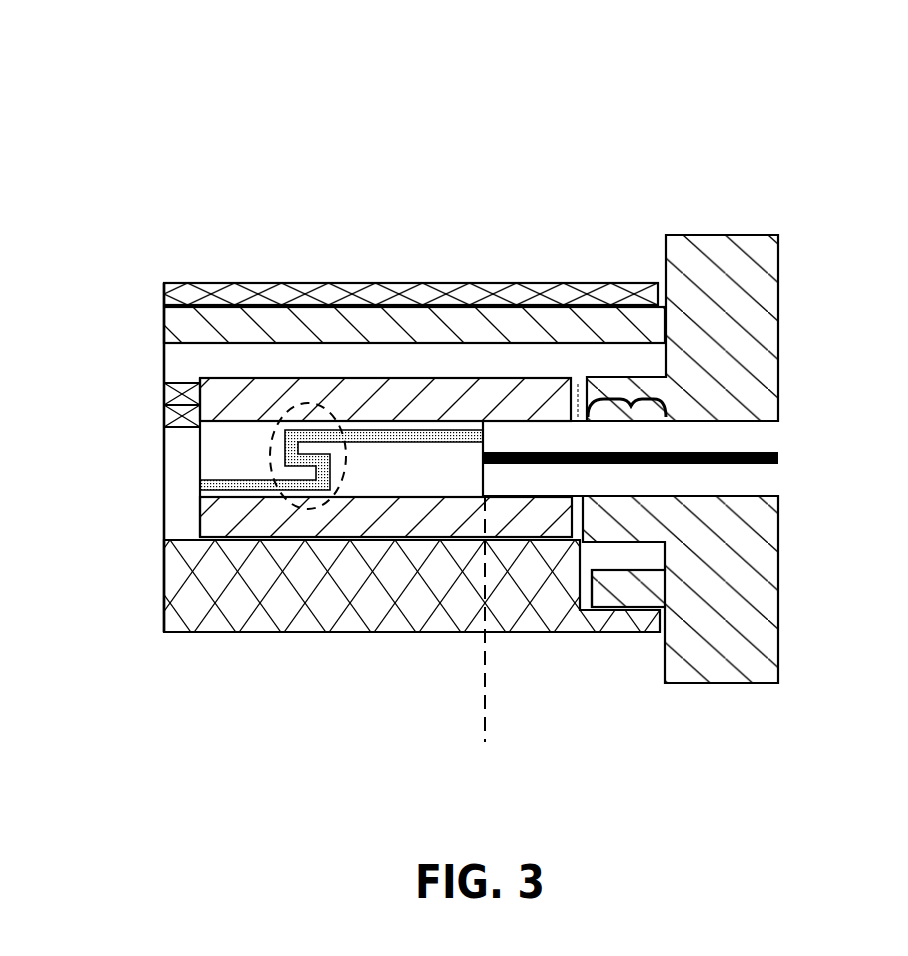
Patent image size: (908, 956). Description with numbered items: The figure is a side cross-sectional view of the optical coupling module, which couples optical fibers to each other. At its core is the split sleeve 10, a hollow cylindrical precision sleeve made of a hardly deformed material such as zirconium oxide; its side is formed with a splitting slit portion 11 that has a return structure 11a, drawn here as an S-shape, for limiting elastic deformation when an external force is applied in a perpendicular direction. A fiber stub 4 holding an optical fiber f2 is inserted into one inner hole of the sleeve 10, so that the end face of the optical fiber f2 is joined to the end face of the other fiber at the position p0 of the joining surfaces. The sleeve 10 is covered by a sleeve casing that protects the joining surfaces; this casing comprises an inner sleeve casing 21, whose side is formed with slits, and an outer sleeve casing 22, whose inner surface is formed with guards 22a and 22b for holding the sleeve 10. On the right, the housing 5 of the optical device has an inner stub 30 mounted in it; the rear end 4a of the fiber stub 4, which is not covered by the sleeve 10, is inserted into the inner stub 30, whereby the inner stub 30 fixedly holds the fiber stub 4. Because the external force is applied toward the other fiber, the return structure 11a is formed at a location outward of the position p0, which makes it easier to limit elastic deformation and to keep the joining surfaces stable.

The outer sleeve casing 22 is at (315, 292).
The guard 22a is at (164, 420).
The guard 22b is at (190, 578).
The split sleeve 10 is at (240, 395).
The splitting slit portion 11 is at (430, 432).
The return structure 11a is at (320, 404).
The housing 5 is at (780, 600).
The fiber stub 4 is at (752, 438).
The rear end of the fiber stub 4a is at (628, 398).
The optical fiber f2 is at (780, 454).
The inner stub 30 is at (622, 380).
The inner sleeve casing 21 is at (640, 587).
The position of the joining surfaces p0 is at (486, 636).